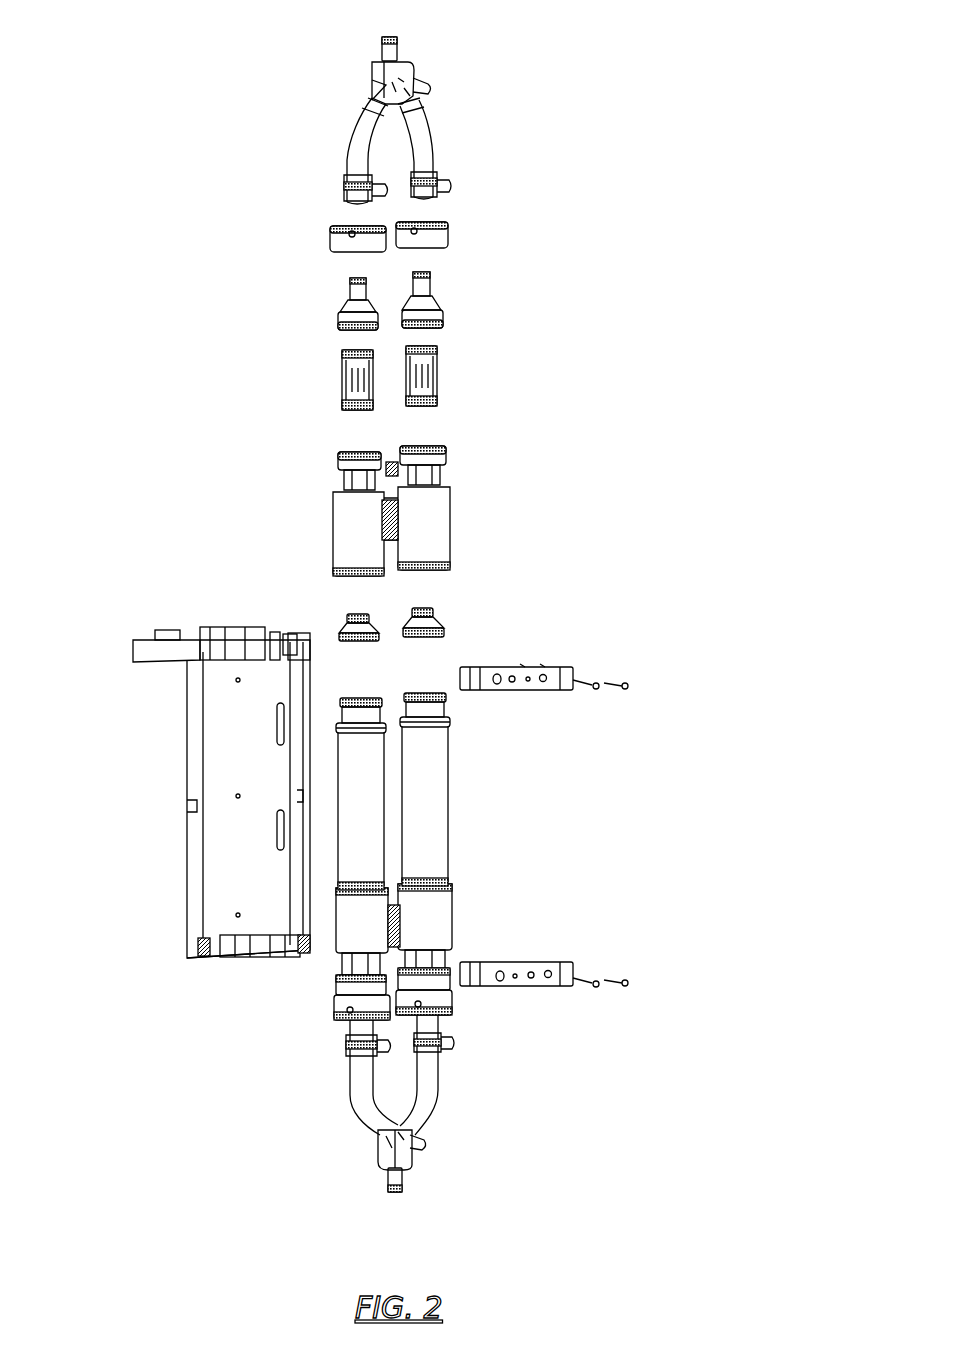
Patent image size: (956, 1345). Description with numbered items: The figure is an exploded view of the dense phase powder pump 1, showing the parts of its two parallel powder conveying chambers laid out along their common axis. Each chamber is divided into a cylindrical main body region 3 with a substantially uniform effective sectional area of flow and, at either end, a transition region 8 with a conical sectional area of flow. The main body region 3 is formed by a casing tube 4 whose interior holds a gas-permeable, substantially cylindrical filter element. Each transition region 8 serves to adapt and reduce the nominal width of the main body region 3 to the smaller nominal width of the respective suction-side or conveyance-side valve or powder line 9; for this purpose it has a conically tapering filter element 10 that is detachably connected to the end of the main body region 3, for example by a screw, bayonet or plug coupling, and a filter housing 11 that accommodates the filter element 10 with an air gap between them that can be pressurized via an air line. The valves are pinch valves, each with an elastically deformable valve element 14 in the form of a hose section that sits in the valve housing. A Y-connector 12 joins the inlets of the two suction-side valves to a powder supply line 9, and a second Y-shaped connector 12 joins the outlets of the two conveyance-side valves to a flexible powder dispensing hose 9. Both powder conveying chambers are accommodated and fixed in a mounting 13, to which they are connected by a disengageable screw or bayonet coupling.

The dense phase powder pump 1 is at (369, 596).
The main body region 3 is at (423, 769).
The casing tube 4 is at (503, 791).
The transition region 8 is at (360, 920).
The powder line 9 is at (388, 53).
The filter element 10 is at (372, 630).
The filter housing 11 is at (355, 532).
The Y-connector 12 is at (395, 75).
The mounting 13 is at (220, 797).
The elastically deformable valve element 14 is at (352, 302).